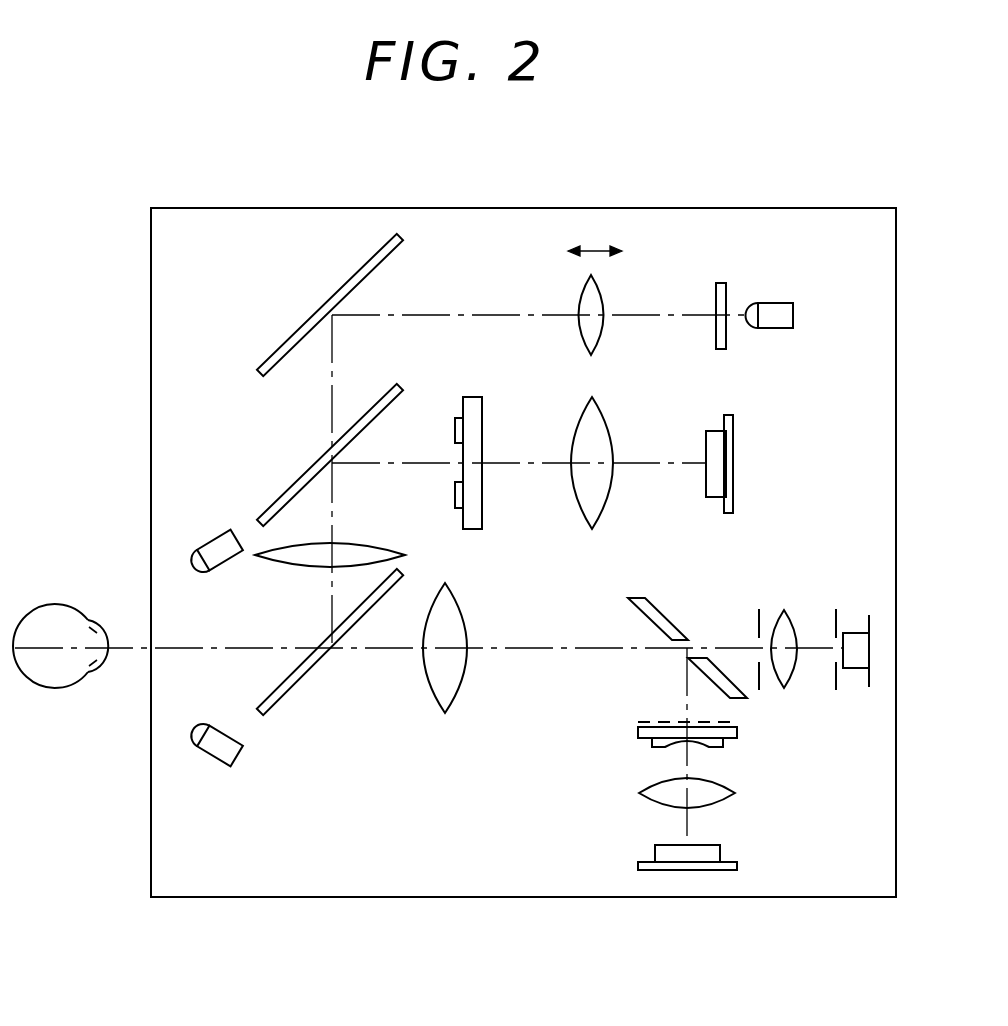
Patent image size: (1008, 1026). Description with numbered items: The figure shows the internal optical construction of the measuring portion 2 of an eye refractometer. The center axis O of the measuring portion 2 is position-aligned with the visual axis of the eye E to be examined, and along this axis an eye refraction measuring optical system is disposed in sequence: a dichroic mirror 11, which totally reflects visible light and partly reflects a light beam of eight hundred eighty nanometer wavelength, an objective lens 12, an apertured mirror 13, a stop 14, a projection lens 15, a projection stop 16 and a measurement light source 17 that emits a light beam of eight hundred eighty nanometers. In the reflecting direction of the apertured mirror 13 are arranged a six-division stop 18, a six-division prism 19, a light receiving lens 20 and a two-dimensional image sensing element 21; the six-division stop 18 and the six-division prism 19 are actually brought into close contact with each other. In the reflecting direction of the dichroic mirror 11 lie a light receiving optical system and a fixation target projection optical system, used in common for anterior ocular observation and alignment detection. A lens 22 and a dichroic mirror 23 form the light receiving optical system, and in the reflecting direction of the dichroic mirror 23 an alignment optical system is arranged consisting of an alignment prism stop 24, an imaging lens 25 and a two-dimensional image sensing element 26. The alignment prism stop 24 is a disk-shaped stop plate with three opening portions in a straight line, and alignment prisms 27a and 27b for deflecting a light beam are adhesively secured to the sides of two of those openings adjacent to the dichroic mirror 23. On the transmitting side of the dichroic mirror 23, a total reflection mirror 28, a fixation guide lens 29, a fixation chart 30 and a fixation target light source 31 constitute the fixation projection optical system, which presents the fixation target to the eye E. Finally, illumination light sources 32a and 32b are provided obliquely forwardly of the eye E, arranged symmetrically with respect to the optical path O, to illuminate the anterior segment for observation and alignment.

The measuring portion 2 is at (798, 208).
The dichroic mirror 11 is at (290, 688).
The objective lens 12 is at (440, 693).
The apertured mirror 13 is at (655, 612).
The stop 14 is at (756, 627).
The projection lens 15 is at (788, 628).
The projection stop 16 is at (834, 675).
The measurement light source 17 is at (857, 665).
The six-division stop 18 is at (650, 718).
The six-division prism 19 is at (652, 742).
The light receiving lens 20 is at (663, 798).
The two-dimensional image sensing element 21 is at (715, 853).
The lens 22 is at (303, 560).
The dichroic mirror 23 is at (298, 485).
The alignment prism stop 24 is at (480, 430).
The imaging lens 25 is at (602, 440).
The two-dimensional image sensing element 26 is at (718, 453).
The alignment prism 27a is at (451, 428).
The alignment prism 27b is at (455, 496).
The total reflection mirror 28 is at (298, 337).
The fixation guide lens 29 is at (587, 295).
The fixation chart 30 is at (715, 297).
The fixation target light source 31 is at (794, 316).
The illumination light source 32a is at (213, 545).
The illumination light source 32b is at (218, 752).
The eye to be examined E is at (58, 607).
The center axis O is at (522, 646).